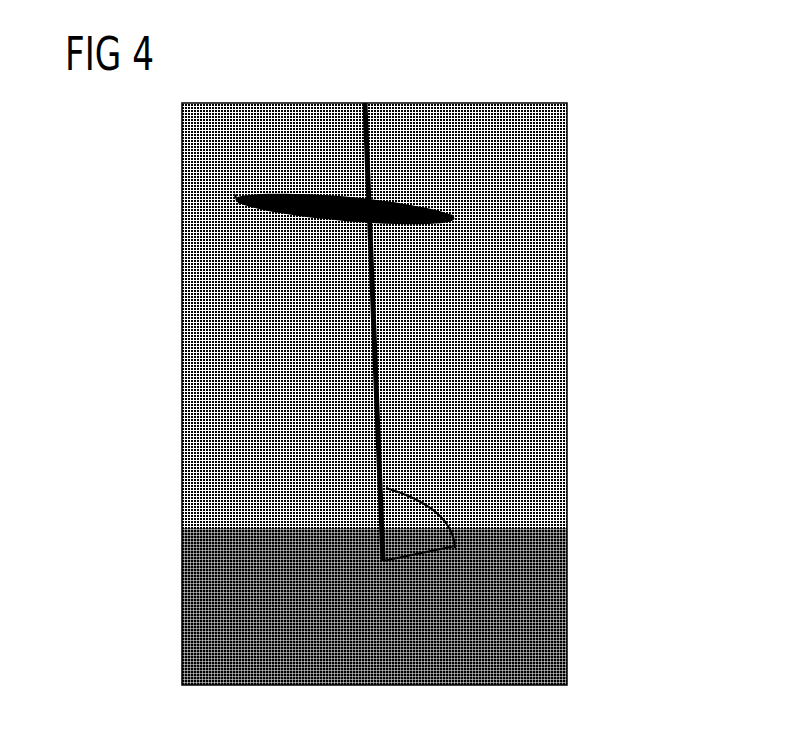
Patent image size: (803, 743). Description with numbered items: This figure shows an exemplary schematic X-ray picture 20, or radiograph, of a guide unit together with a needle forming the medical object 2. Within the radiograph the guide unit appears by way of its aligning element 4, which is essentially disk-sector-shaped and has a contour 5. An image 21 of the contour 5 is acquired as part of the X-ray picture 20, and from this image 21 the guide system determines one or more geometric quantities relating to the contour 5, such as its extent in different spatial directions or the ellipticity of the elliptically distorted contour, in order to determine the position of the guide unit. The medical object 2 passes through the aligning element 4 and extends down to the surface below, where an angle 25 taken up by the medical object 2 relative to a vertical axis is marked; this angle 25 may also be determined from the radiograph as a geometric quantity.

The X-ray picture 20 is at (574, 364).
The medical object 2 is at (374, 345).
The aligning element 4 is at (285, 190).
The contour 5 is at (228, 190).
The image of the contour 21 is at (421, 172).
The angle 25 is at (395, 482).